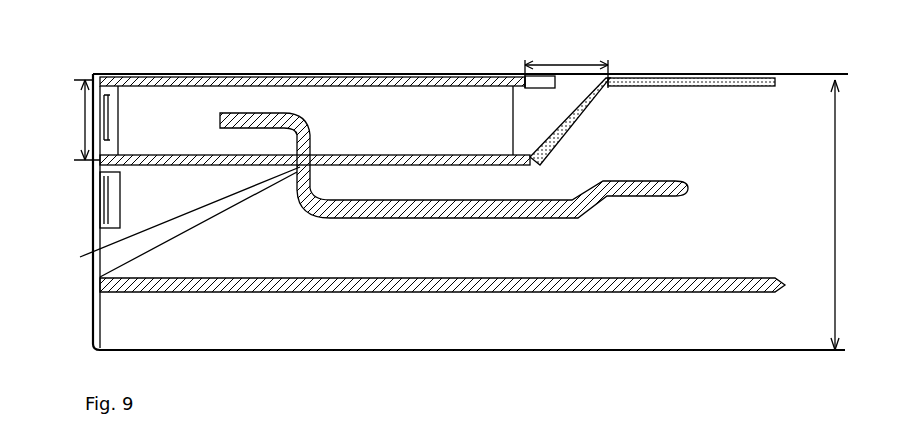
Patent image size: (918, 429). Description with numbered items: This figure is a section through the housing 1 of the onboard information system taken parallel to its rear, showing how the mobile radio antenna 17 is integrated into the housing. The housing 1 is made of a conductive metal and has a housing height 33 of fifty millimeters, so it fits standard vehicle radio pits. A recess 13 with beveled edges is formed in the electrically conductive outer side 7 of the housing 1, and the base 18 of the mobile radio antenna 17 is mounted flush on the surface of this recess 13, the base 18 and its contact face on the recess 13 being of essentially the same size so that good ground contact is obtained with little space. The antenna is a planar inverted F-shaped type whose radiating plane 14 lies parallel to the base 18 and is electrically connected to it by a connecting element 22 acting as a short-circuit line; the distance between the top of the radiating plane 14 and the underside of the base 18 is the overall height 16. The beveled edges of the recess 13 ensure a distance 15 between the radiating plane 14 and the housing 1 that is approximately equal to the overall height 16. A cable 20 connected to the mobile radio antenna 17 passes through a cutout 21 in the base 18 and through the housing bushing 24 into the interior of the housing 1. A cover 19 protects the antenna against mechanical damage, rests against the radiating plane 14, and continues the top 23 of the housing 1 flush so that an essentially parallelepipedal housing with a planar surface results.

The housing 1 is at (487, 350).
The outer side 7 is at (722, 78).
The recess 13 is at (575, 110).
The radiating plane 14 is at (484, 80).
The distance 15 is at (566, 65).
The overall height 16 is at (75, 120).
The mobile radio antenna 17 is at (365, 105).
The base 18 is at (95, 184).
The cover 19 is at (205, 77).
The cable 20 is at (293, 160).
The cutout 21 is at (171, 222).
The connecting element 22 is at (145, 108).
The top 23 is at (752, 78).
The housing bushing 24 is at (110, 281).
The housing height 33 is at (846, 215).